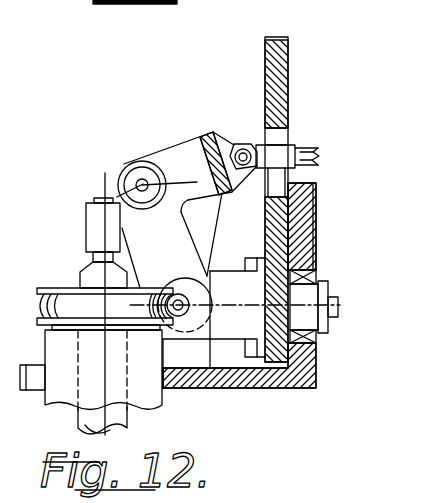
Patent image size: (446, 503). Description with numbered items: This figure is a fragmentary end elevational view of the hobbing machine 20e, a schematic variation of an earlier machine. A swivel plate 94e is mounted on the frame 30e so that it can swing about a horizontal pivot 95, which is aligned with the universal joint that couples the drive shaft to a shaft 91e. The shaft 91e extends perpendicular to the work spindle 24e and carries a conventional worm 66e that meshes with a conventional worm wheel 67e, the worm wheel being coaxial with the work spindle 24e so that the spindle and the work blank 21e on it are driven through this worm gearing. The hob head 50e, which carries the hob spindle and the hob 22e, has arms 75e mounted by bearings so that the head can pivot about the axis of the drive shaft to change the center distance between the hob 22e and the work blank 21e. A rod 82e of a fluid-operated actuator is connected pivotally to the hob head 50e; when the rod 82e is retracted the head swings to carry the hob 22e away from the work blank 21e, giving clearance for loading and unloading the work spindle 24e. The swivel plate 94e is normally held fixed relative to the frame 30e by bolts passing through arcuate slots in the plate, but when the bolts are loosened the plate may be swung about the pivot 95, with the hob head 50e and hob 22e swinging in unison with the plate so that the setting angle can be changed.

The machine 20e is at (187, 93).
The work blank 21e is at (90, 212).
The hob 22e is at (120, 165).
The work spindle 24e is at (85, 265).
The frame 30e is at (203, 388).
The hob head 50e is at (163, 146).
The worm 66e is at (212, 272).
The worm wheel 67e is at (93, 316).
The arms 75e is at (184, 213).
The rod 82e is at (303, 148).
The shaft 91e is at (203, 305).
The swivel plate 94e is at (265, 68).
The horizontal pivot 95 is at (300, 320).